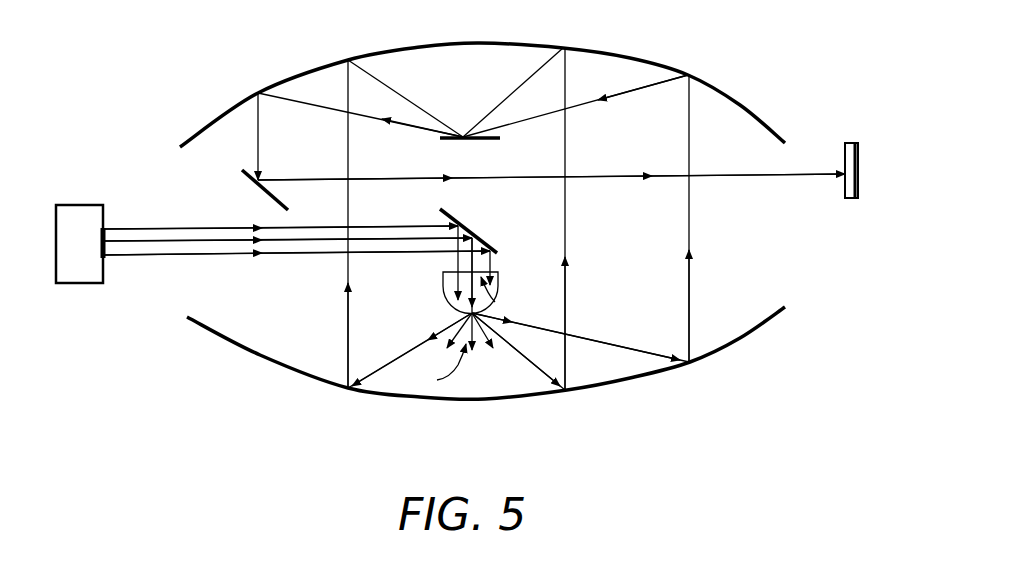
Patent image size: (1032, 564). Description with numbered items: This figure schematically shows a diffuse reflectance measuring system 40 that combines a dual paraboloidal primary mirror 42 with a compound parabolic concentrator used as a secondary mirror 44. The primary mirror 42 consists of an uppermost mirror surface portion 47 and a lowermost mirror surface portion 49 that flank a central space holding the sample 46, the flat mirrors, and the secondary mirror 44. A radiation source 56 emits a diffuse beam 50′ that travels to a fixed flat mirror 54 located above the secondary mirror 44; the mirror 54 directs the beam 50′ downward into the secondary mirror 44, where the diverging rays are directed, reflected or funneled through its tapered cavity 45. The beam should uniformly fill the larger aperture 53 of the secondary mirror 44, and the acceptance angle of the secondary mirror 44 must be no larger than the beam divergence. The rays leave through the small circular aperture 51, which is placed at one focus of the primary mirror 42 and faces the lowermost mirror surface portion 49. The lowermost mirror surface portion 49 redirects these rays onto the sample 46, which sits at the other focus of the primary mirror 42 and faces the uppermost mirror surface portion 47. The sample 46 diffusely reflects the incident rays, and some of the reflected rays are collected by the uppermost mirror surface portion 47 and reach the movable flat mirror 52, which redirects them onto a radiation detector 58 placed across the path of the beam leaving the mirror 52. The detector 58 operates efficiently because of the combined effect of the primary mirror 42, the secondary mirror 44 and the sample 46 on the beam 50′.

The system 40 is at (746, 53).
The primary mirror 42 is at (770, 118).
The secondary mirror 44 is at (500, 297).
The cavity 45 is at (445, 300).
The sample 46 is at (490, 141).
The uppermost mirror surface portion 47 is at (477, 47).
The lowermost mirror surface portion 49 is at (494, 395).
The diffuse beam 50′ is at (195, 258).
The small circular aperture 51 is at (437, 380).
The movable flat mirror 52 is at (255, 192).
The larger aperture 53 is at (494, 309).
The fixed flat mirror 54 is at (480, 241).
The radiation source 56 is at (78, 205).
The radiation detector 58 is at (846, 199).